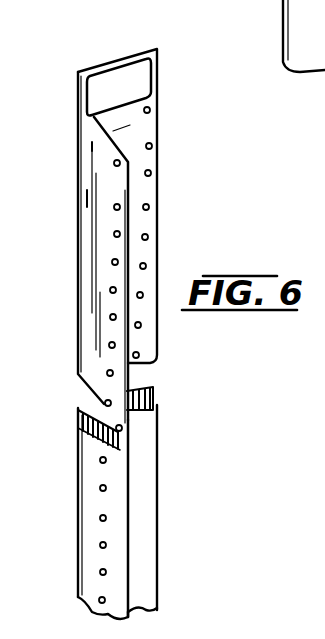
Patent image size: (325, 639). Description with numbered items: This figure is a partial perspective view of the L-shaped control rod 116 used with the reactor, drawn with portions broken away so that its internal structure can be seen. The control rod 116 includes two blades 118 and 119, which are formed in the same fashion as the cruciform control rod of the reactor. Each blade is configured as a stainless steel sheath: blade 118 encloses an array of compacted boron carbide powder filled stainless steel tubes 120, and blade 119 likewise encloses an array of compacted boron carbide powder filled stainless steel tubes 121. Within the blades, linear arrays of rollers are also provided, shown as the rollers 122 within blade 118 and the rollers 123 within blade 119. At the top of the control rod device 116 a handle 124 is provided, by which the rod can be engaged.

The L-shaped control rod 116 is at (244, 170).
The blade 118 is at (146, 221).
The blade 119 is at (88, 226).
The array of compacted boron carbide powder filled stainless steel tubes 120 is at (153, 389).
The array of compacted boron carbide powder filled stainless steel tubes 121 is at (106, 408).
The linear array of rollers 122 is at (146, 269).
The linear array of rollers 123 is at (116, 265).
The handle 124 is at (129, 57).